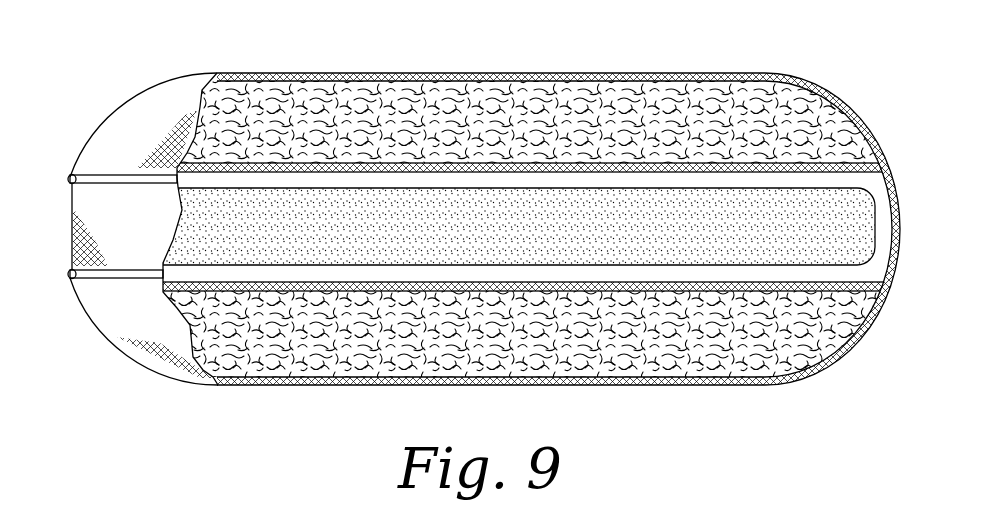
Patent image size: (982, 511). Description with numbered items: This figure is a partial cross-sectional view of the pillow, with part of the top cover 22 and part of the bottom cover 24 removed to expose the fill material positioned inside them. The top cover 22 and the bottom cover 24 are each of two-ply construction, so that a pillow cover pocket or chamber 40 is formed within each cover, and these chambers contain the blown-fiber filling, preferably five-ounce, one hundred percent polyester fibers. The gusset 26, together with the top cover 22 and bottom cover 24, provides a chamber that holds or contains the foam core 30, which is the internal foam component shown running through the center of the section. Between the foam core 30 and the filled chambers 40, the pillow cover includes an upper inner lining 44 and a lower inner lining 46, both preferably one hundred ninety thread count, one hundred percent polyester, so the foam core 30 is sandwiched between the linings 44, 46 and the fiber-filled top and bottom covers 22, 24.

The top cover 22 is at (147, 126).
The bottom cover 24 is at (135, 302).
The gusset 26 is at (118, 207).
The foam core 30 is at (847, 232).
The pillow cover pocket or chamber 40 is at (826, 125).
The upper inner lining 44 is at (858, 173).
The lower inner lining 46 is at (855, 285).